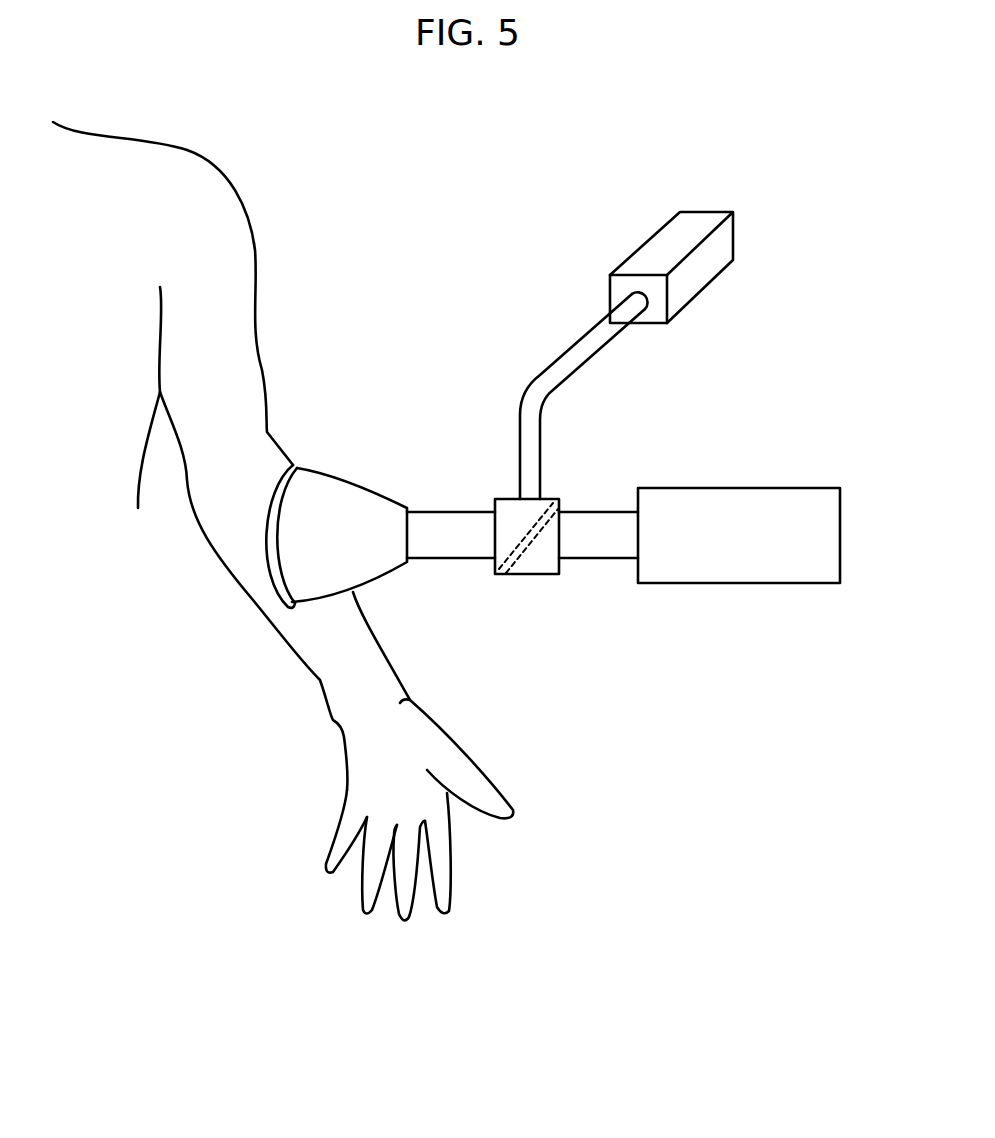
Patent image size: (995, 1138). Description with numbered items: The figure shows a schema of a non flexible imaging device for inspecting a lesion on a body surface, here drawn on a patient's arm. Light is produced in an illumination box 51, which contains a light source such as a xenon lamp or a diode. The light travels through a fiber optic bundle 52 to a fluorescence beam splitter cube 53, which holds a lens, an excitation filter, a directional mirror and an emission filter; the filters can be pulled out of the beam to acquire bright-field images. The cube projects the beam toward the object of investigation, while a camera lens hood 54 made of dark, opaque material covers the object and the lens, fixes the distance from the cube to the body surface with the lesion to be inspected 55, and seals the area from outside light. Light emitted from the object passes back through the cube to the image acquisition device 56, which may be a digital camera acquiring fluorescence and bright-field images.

The illumination box 51 is at (708, 283).
The fiber optic bundle 52 is at (563, 370).
The fluorescence beam splitter cube 53 is at (533, 574).
The camera lens hood 54 is at (327, 468).
The body surface with the lesion to be inspected 55 is at (767, 583).
The image acquisition device 56 is at (263, 340).